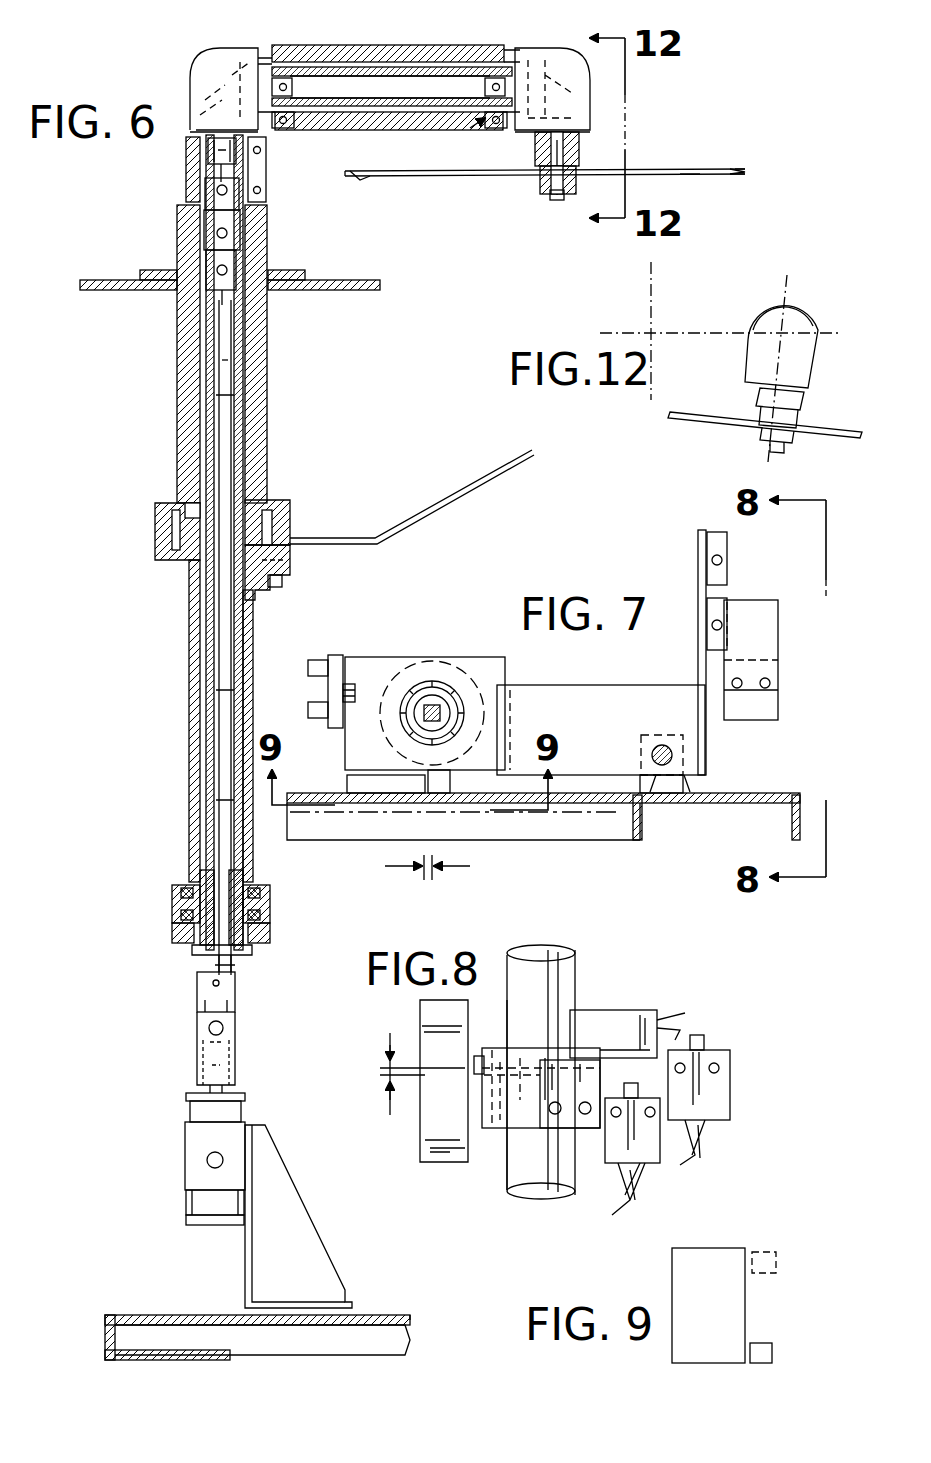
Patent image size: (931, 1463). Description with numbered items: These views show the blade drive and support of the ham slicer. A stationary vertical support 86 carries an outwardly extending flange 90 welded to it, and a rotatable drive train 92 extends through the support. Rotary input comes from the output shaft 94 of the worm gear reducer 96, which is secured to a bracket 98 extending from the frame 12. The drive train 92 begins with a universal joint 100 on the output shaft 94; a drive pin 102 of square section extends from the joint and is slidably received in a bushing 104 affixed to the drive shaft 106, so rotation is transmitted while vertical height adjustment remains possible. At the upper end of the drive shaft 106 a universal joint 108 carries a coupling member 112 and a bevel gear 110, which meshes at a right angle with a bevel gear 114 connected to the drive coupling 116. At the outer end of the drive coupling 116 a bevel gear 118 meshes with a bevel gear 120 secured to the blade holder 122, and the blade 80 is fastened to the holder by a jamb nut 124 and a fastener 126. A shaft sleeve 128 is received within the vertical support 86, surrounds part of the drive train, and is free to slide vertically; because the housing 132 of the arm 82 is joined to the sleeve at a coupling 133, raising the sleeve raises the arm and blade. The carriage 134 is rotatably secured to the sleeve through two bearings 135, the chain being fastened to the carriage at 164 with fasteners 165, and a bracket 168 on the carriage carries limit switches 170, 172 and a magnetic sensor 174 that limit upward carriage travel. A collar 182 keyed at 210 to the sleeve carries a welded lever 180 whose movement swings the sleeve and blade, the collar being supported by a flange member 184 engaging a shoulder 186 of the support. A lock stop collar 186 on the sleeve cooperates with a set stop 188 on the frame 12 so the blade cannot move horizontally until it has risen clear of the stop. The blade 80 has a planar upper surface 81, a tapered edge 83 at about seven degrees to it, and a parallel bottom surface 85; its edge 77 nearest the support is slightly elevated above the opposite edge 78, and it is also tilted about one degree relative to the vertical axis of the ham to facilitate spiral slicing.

In FIG. 6, the frame 12 is at (365, 1315).
In FIG. 7, the frame 12 is at (358, 825).
In FIG. 6, the blade edge closest to vertical support 77 is at (350, 171).
In FIG. 6, the opposite blade edge 78 is at (760, 171).
In FIG. 6, the blade 80 is at (680, 168).
In FIG. 12, the blade 80 is at (695, 410).
In FIG. 6, the upper surface 81 is at (745, 170).
In FIG. 6, the arm 82 is at (470, 128).
In FIG. 12, the arm 82 is at (795, 295).
In FIG. 6, the tapered edge 83 is at (750, 176).
In FIG. 6, the bottom surface 85 is at (690, 178).
In FIG. 6, the stationary vertical support 86 is at (268, 248).
In FIG. 6, the flange 90 is at (160, 272).
In FIG. 6, the drive train 92 is at (230, 366).
In FIG. 6, the output shaft 94 is at (232, 1095).
In FIG. 6, the worm gear reducer 96 is at (200, 1115).
In FIG. 6, the bracket 98 is at (265, 1180).
In FIG. 6, the universal joint 100 is at (197, 1025).
In FIG. 6, the drive pin 102 is at (219, 738).
In FIG. 7, the drive pin 102 is at (440, 700).
In FIG. 6, the bushing 104 is at (205, 872).
In FIG. 6, the drive shaft 106 is at (207, 684).
In FIG. 6, the universal joint 108 is at (240, 212).
In FIG. 6, the bevel gear 110 is at (222, 95).
In FIG. 6, the coupling member 112 is at (233, 160).
In FIG. 6, the bevel gear 114 is at (240, 62).
In FIG. 6, the drive coupling 116 is at (410, 62).
In FIG. 6, the bevel gear 118 is at (548, 68).
In FIG. 6, the bevel gear 120 is at (575, 118).
In FIG. 6, the blade holder 122 is at (580, 155).
In FIG. 6, the jamb nut 124 is at (540, 185).
In FIG. 12, the jamb nut 124 is at (762, 437).
In FIG. 6, the fastener 126 is at (552, 200).
In FIG. 12, the fastener 126 is at (772, 452).
In FIG. 6, the shaft sleeve 128 is at (189, 621).
In FIG. 6, the housing 132 is at (348, 60).
In FIG. 6, the coupling 133 is at (186, 150).
In FIG. 7, the carriage 134 is at (378, 672).
In FIG. 6, the bearings 135 is at (175, 888).
In FIG. 7, the chain fastening point 164 is at (340, 700).
In FIG. 7, the fasteners 165 is at (312, 660).
In FIG. 7, the bracket 168 is at (585, 690).
In FIG. 7, the limit switch 170 is at (712, 615).
In FIG. 8, the limit switch 170 is at (645, 1150).
In FIG. 7, the limit switch 172 is at (715, 545).
In FIG. 8, the limit switch 172 is at (708, 1098).
In FIG. 7, the magnetic sensor 174 is at (760, 640).
In FIG. 8, the magnetic sensor 174 is at (598, 1022).
In FIG. 6, the lever 180 is at (490, 450).
In FIG. 6, the collar 182 is at (278, 538).
In FIG. 6, the flange member 184 is at (275, 500).
In FIG. 6, the shoulder / lock stop collar 186 is at (182, 500).
In FIG. 7, the shoulder / lock stop collar 186 is at (440, 790).
In FIG. 9, the shoulder / lock stop collar 186 is at (765, 1352).
In FIG. 7, the set stop 188 is at (395, 795).
In FIG. 9, the set stop 188 is at (692, 1268).
In FIG. 6, the key 210 is at (283, 578).